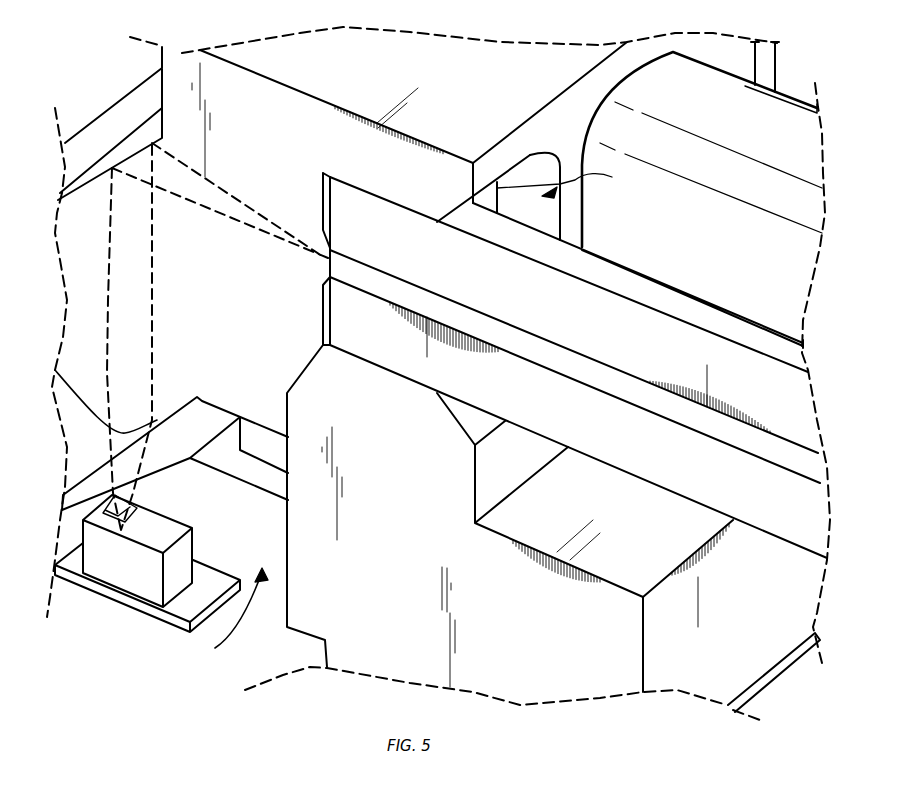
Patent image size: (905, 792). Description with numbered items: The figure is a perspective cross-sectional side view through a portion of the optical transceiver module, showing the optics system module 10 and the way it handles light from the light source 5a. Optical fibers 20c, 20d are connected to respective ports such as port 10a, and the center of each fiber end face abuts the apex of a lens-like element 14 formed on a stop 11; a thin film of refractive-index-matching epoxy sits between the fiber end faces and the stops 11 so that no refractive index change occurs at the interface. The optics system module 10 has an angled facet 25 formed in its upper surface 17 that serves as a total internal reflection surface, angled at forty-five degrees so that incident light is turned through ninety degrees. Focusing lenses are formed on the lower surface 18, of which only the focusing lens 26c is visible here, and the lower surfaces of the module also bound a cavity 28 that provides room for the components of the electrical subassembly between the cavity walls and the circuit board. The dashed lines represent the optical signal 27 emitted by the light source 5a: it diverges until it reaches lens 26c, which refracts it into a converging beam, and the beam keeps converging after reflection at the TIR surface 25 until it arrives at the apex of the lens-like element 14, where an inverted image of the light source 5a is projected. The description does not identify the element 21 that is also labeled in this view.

The optics system module 10 is at (453, 107).
The port 10a is at (569, 196).
The stop 11 is at (323, 192).
The lens-like element 14 is at (330, 240).
The upper surface 17 is at (345, 86).
The lower surface 18 is at (770, 683).
The optical fiber 20c is at (668, 310).
The optical fiber 20d is at (722, 98).
The beam lower face 21 is at (340, 308).
The angled facet 25 is at (95, 173).
The focusing lens 26c is at (122, 433).
The optical signal 27 is at (232, 220).
The cavity 28 is at (215, 649).
The light source 5a is at (166, 520).